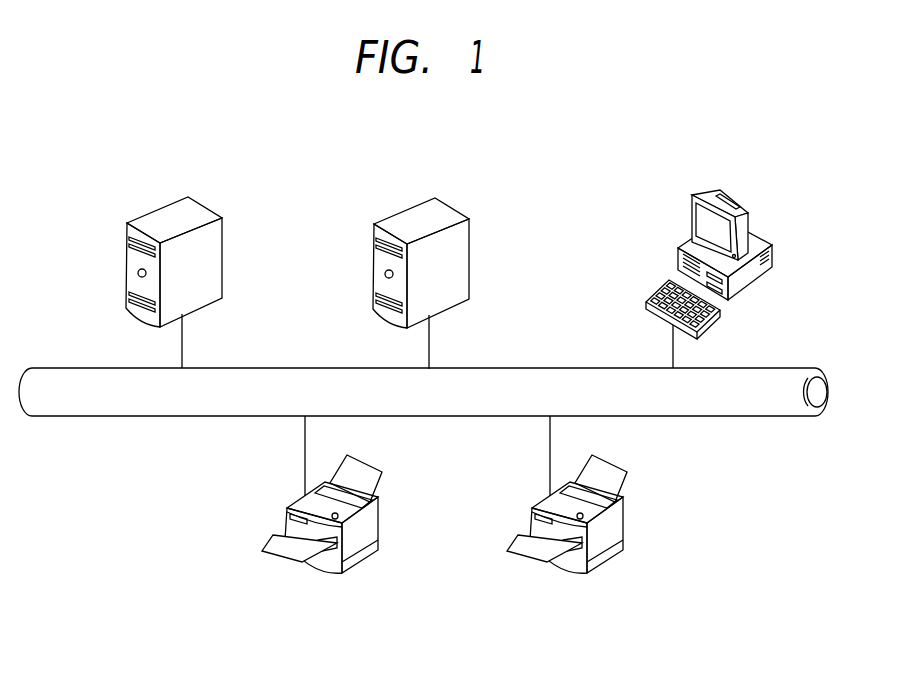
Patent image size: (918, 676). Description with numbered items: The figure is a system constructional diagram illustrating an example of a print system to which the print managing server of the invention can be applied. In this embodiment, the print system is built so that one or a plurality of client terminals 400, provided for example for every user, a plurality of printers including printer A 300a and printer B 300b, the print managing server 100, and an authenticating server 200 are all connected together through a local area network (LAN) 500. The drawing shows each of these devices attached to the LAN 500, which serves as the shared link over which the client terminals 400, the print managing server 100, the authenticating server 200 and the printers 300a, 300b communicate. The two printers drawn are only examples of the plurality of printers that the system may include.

The print managing server 100 is at (163, 195).
The authenticating server 200 is at (414, 195).
The printer A 300a is at (307, 574).
The printer B 300b is at (552, 574).
The client terminal 400 is at (729, 195).
The local area network (LAN) 500 is at (752, 417).